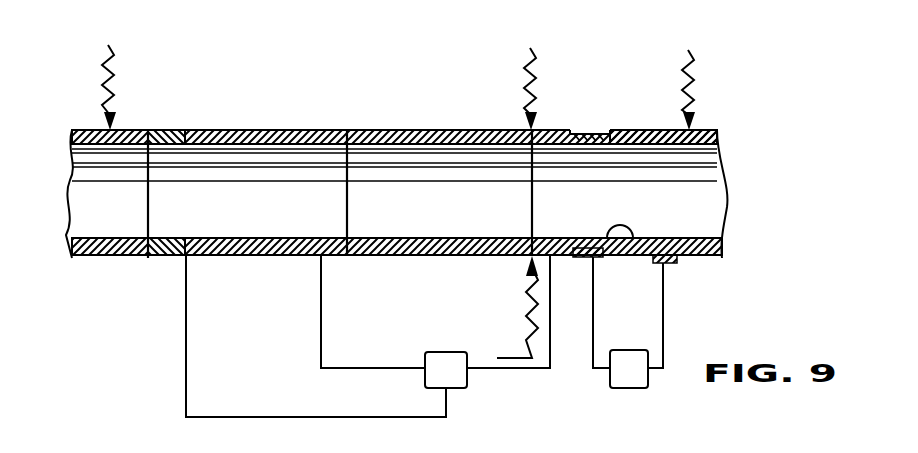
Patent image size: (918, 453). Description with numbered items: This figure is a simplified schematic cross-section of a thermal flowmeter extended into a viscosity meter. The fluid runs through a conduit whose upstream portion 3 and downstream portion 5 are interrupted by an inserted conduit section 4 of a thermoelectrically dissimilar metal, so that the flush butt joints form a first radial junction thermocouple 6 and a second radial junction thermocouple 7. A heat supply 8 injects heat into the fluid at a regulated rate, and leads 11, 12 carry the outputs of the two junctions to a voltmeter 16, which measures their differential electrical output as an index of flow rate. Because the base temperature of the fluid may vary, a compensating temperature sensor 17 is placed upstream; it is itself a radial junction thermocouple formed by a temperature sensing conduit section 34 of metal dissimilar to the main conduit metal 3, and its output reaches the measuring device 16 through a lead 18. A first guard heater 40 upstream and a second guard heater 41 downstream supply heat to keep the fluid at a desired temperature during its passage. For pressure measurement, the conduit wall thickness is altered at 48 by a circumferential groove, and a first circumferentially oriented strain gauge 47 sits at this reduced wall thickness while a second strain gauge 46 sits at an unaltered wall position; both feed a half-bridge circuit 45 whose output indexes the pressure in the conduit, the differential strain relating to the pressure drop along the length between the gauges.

The upstream conduit portion 3 is at (95, 130).
The inserted conduit section 4 is at (440, 130).
The downstream conduit portion 5 is at (665, 130).
The first radial junction thermocouple 6 is at (347, 130).
The second radial junction thermocouple 7 is at (520, 130).
The heat supply 8 is at (528, 74).
The lead 11 is at (321, 340).
The lead 12 is at (495, 368).
The voltmeter 16 is at (420, 385).
The compensating temperature sensor 17 is at (160, 262).
The lead 18 is at (186, 375).
The temperature sensing conduit section 34 is at (165, 130).
The first guard heater 40 is at (112, 66).
The second guard heater 41 is at (690, 96).
The half-bridge circuit 45 is at (640, 388).
The second circumferentially oriented strain gauge 46 is at (670, 263).
The first circumferentially oriented strain gauge 47 is at (580, 258).
The reduced wall thickness 48 is at (590, 130).